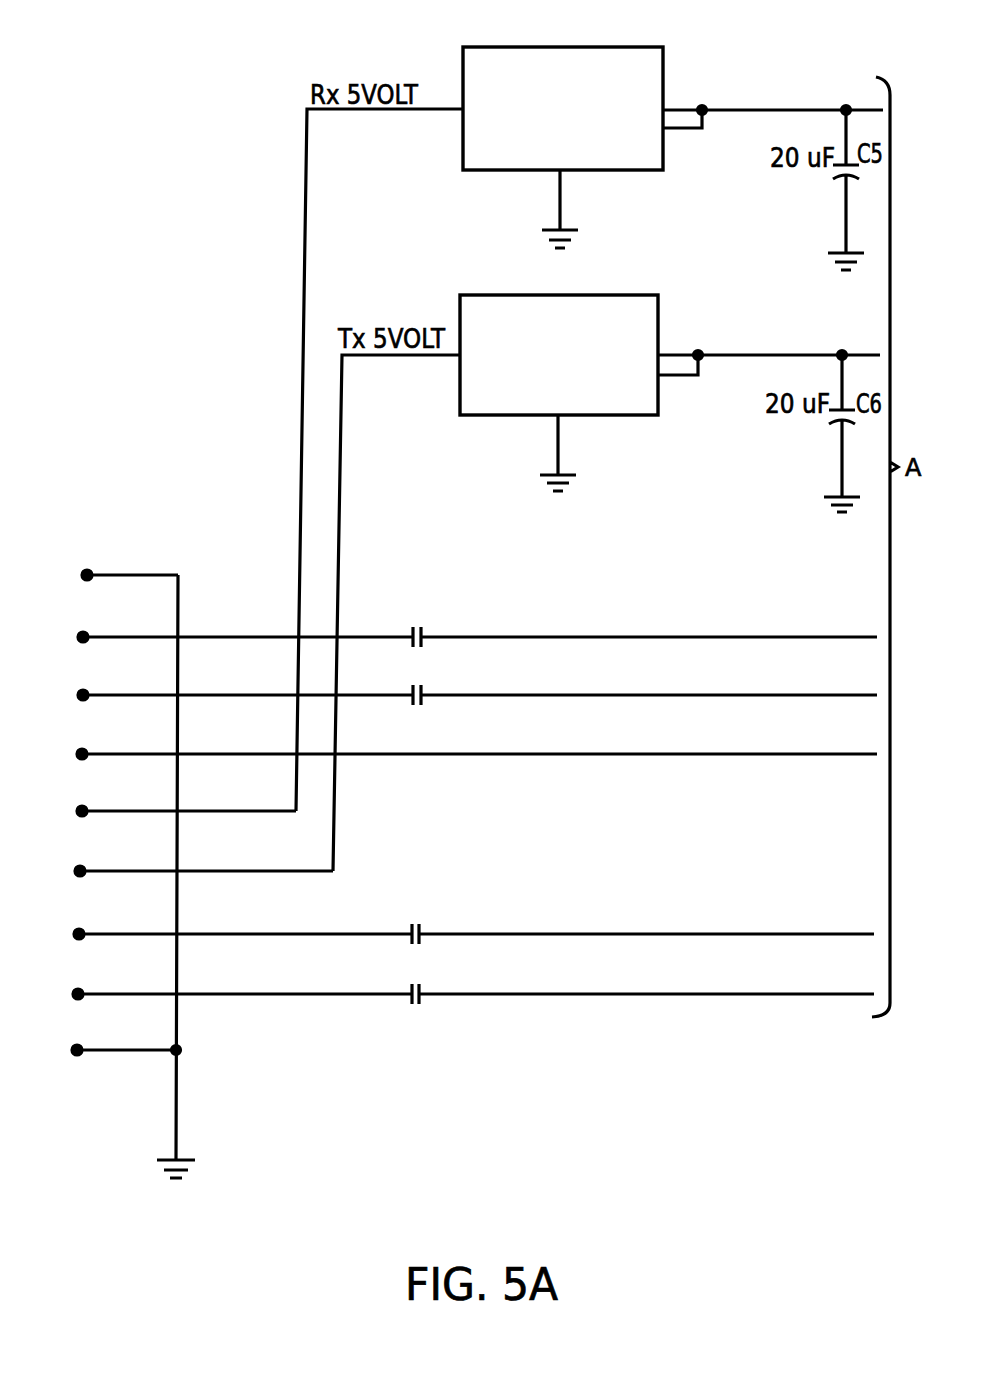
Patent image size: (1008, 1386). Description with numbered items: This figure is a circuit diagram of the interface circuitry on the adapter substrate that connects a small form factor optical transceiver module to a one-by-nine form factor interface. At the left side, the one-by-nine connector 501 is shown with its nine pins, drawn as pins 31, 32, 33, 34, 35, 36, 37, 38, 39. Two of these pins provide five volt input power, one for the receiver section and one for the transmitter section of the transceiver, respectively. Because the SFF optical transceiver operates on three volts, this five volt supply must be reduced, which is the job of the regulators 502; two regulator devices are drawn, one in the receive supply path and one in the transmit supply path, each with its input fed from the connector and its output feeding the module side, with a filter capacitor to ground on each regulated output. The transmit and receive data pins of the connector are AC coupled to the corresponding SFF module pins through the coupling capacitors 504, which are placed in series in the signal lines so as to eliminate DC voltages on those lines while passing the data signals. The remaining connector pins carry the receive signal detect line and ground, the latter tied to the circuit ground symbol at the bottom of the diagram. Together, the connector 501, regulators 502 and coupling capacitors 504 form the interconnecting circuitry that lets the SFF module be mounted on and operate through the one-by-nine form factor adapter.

The connector pin 31 is at (130, 560).
The connector pin 32 (Rx DATA+) 32 is at (477, 637).
The connector pin 33 (Rx DATA-) 33 is at (477, 696).
The connector pin 34 (Rx SIGNAL_DETECT) 34 is at (477, 739).
The connector pin 35 (Rx 5V supply) 35 is at (186, 797).
The connector pin 36 (Tx 5V supply) 36 is at (204, 856).
The connector pin 37 (Tx DATA-) 37 is at (474, 936).
The connector pin 38 (Tx DATA+) 38 is at (473, 998).
The connector pin 39 (ground) 39 is at (126, 1036).
The 1×9 connector 501 is at (157, 548).
The regulators 502 is at (660, 305).
The coupling capacitors 504 is at (388, 772).